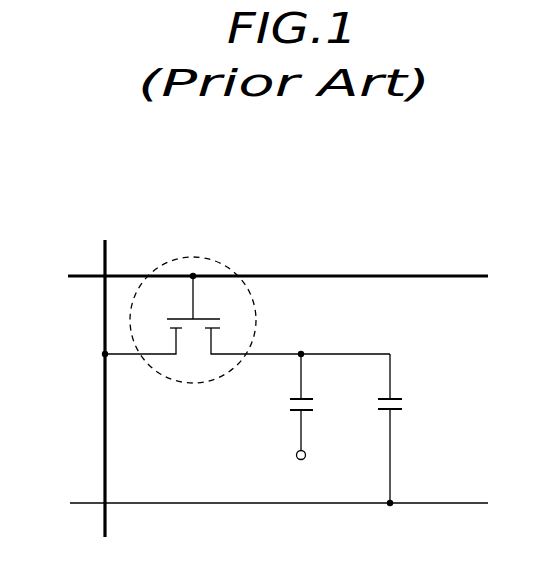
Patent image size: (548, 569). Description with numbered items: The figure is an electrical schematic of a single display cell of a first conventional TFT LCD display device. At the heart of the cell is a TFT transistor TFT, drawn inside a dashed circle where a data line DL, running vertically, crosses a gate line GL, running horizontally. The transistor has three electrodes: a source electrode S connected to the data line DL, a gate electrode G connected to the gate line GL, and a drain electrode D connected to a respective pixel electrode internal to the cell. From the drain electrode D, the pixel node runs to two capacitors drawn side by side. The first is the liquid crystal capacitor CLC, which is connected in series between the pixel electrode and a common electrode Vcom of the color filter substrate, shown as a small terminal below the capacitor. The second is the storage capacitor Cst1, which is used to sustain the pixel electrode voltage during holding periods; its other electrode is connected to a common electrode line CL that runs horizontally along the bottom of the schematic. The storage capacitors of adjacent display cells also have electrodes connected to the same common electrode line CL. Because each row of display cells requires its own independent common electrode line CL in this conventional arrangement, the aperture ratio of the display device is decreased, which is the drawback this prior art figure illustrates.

The data line DL is at (102, 248).
The gate line GL is at (472, 272).
The common electrode line CL is at (473, 502).
The TFT transistor TFT is at (247, 293).
The gate electrode G is at (195, 305).
The source electrode S is at (173, 345).
The drain electrode D is at (213, 345).
The liquid crystal capacitor CLC is at (281, 402).
The common electrode Vcom is at (302, 469).
The storage capacitor Cst1 is at (416, 428).